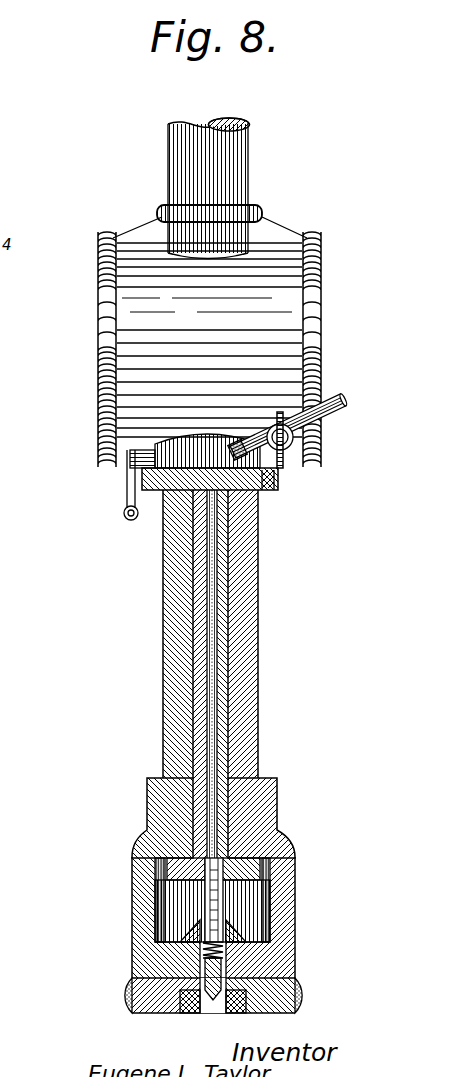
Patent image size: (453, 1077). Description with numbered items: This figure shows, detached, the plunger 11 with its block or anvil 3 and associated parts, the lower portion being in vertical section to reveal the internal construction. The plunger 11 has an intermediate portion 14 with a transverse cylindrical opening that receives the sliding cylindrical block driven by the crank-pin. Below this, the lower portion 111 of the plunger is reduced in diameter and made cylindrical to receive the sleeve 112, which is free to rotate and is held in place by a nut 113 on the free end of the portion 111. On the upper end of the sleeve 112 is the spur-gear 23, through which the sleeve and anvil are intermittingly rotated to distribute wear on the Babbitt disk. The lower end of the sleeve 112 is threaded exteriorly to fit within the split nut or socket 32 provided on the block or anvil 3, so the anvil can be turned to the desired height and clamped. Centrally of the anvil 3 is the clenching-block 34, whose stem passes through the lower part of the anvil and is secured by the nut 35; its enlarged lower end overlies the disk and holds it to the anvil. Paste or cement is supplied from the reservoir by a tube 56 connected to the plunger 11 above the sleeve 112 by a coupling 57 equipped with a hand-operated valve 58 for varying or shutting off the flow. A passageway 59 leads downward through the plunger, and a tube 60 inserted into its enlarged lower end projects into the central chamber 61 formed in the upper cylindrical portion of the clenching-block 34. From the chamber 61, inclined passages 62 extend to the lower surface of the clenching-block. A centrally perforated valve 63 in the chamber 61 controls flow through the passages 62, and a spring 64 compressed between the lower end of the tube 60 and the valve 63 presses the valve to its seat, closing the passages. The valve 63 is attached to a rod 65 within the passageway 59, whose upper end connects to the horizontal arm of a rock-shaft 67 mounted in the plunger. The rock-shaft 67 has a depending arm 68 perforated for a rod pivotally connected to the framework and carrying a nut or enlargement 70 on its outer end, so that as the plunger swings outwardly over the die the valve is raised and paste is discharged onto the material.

The plunger 11 is at (160, 141).
The intermediate portion 14 is at (118, 292).
The rock-shaft 67 is at (100, 447).
The depending arm 68 is at (121, 491).
The nut or enlargement 70 is at (125, 518).
The spur-gear 23 is at (285, 483).
The coupling 57 is at (268, 488).
The tube 56 is at (347, 411).
The hand-operated valve 58 is at (292, 448).
The sleeve 112 is at (260, 575).
The lower portion of the plunger 111 is at (230, 644).
The passageway 59 is at (207, 732).
The rod 65 is at (214, 763).
The nut or socket 32 is at (260, 812).
The block or anvil 3 is at (302, 879).
The nut 113 is at (270, 865).
The tube 60 is at (230, 906).
The nut 35 is at (183, 923).
The central chamber 61 is at (183, 973).
The spring 64 is at (294, 943).
The valve 63 is at (297, 957).
The inclined passages 62 is at (197, 1008).
The clenching-block 34 is at (215, 1001).